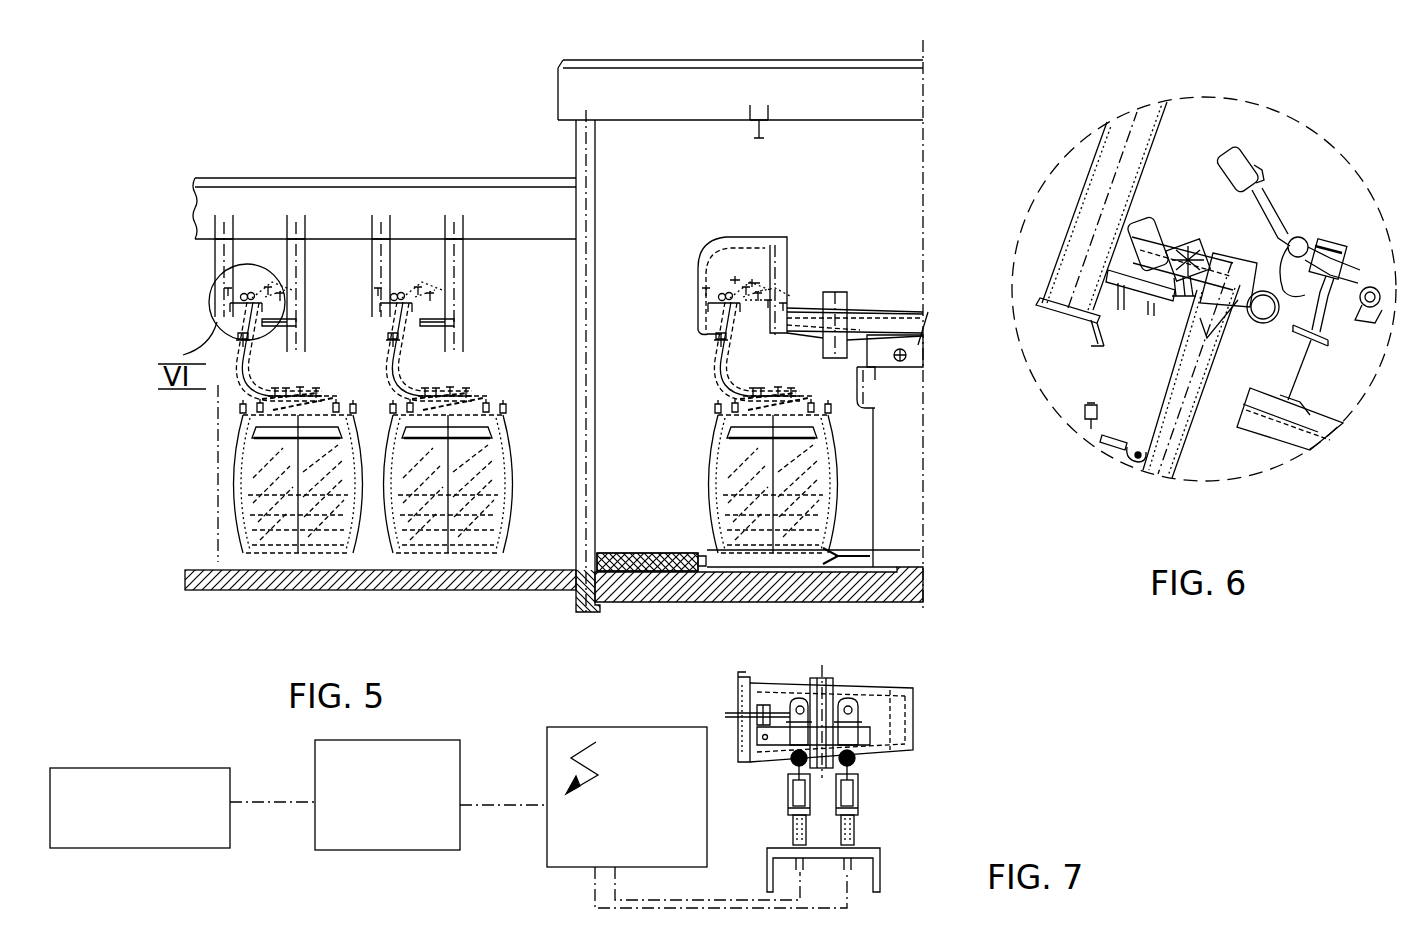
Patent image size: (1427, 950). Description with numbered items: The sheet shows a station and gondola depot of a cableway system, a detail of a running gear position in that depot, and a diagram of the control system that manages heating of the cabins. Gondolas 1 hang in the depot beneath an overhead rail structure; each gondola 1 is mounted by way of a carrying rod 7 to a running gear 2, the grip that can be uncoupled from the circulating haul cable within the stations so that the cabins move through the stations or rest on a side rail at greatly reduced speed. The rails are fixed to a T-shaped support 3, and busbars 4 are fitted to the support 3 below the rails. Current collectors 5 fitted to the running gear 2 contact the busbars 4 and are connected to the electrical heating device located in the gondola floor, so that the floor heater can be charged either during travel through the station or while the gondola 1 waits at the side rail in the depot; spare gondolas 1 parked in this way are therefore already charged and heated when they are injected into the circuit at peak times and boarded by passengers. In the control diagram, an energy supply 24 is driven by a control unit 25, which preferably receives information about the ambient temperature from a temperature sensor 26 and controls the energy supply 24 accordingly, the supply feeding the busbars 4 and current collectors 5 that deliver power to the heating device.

In FIG. 5, the gondola 1 is at (490, 460).
In FIG. 6, the running gear 2 is at (1290, 232).
In FIG. 5, the T-shaped support 3 is at (878, 318).
In FIG. 7, the busbar 4 is at (860, 797).
In FIG. 7, the current collector 5 is at (857, 757).
In FIG. 6, the carrying rod 7 is at (1172, 415).
In FIG. 7, the energy supply 24 is at (568, 867).
In FIG. 7, the control unit 25 is at (387, 850).
In FIG. 7, the temperature sensor 26 is at (167, 848).